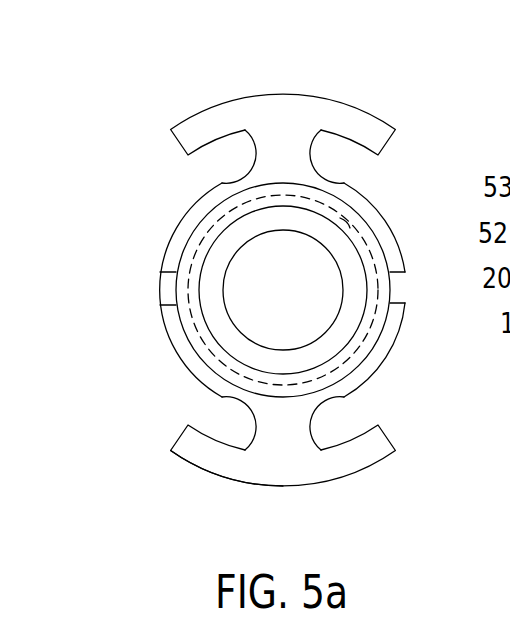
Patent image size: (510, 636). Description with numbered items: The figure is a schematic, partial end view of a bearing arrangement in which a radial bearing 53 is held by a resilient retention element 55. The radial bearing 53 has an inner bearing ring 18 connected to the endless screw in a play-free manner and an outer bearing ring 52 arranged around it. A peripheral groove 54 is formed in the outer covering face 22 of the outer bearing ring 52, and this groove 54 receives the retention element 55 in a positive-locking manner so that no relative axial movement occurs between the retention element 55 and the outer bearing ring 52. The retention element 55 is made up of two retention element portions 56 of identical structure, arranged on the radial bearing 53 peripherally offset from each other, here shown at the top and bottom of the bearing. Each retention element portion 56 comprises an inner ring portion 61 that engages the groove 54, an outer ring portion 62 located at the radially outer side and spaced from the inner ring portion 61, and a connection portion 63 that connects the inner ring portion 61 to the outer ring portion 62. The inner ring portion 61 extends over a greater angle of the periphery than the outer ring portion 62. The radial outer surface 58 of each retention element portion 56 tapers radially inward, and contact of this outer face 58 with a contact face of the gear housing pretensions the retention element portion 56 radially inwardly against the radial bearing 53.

The inner bearing ring 18 is at (212, 322).
The outer face 22 is at (176, 297).
The outer bearing ring 52 is at (205, 347).
The radial bearing 53 is at (168, 263).
The peripheral groove 54 is at (367, 238).
The retention element 55 is at (253, 294).
The retention element portion 56 is at (257, 294).
The radial outer surface 58 is at (185, 460).
The inner ring portion 61 is at (222, 183).
The outer ring portion 62 is at (355, 118).
The connection portion 63 is at (302, 145).